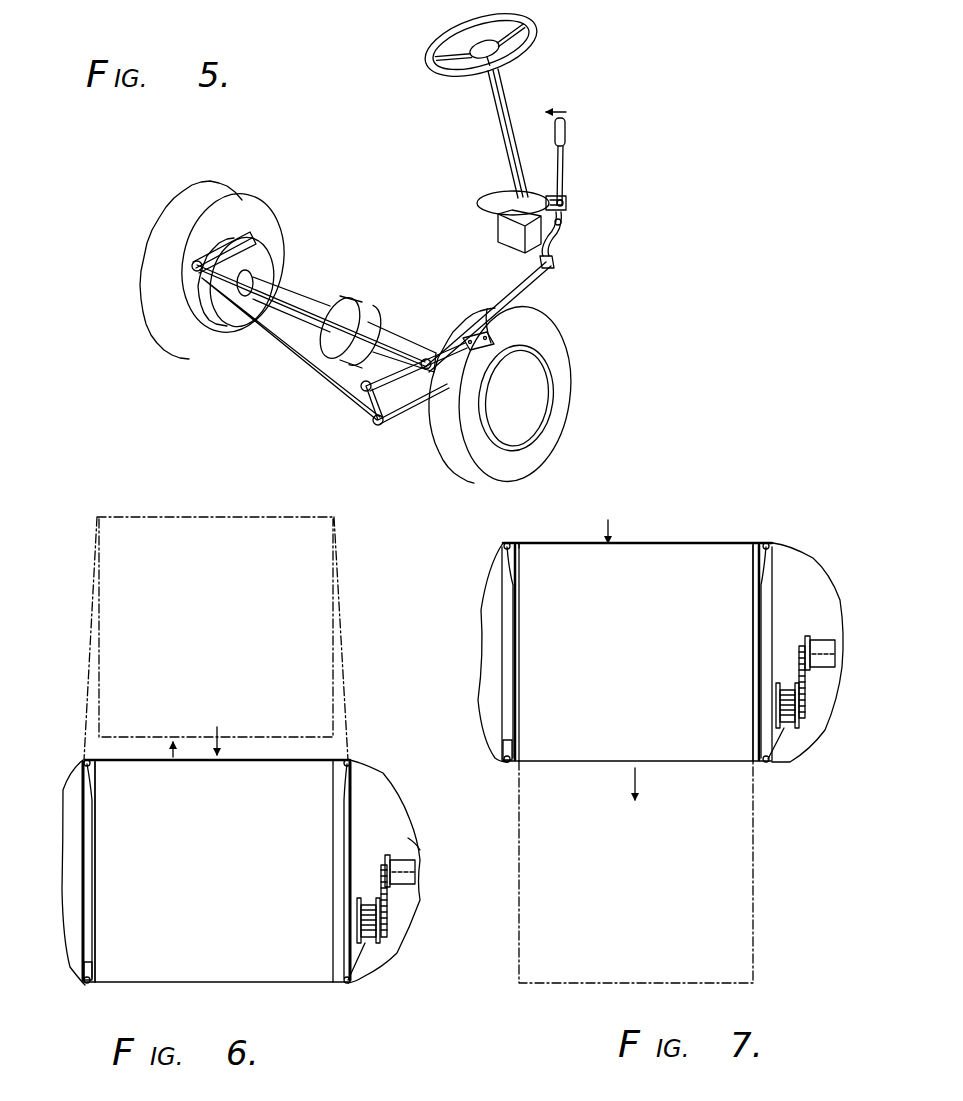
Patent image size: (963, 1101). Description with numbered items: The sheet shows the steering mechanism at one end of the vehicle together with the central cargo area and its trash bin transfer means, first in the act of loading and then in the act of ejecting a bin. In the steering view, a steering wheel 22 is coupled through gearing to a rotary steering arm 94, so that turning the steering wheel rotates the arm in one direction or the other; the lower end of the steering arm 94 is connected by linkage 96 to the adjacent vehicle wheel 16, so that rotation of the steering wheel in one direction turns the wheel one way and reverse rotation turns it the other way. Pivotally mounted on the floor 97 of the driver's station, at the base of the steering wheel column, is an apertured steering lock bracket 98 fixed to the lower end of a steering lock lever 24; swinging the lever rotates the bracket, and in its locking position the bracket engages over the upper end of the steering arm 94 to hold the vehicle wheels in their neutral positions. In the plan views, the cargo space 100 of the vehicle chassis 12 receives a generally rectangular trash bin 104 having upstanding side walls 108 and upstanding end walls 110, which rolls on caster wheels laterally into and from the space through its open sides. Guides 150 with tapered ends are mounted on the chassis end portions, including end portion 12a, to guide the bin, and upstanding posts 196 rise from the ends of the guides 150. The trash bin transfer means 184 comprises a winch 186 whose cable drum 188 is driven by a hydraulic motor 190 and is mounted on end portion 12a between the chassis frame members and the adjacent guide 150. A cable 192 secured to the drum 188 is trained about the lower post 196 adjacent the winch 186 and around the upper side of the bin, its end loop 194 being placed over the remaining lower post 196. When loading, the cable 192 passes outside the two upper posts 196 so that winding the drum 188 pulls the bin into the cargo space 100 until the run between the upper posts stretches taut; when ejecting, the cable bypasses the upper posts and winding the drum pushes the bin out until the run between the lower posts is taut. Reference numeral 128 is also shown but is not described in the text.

In FIG. 6, the vehicle chassis 12 is at (386, 806).
In FIG. 7, the end portion of the vehicle chassis 12a is at (786, 560).
In FIG. 5, the vehicle wheel 16 is at (558, 437).
In FIG. 5, the steering wheel 22 is at (450, 36).
In FIG. 5, the steering lock lever 24 is at (564, 145).
In FIG. 5, the rotary steering arm 94 is at (550, 243).
In FIG. 5, the linkage 96 is at (528, 278).
In FIG. 5, the floor 97 is at (497, 195).
In FIG. 5, the steering lock bracket 98 is at (568, 205).
In FIG. 6, the cargo space 100 is at (95, 932).
In FIG. 7, the cargo space 100 is at (756, 748).
In FIG. 6, the trash bin 104 is at (171, 757).
In FIG. 7, the trash bin 104 is at (608, 526).
In FIG. 6, the side wall 108 is at (264, 760).
In FIG. 7, the side wall 108 is at (703, 543).
In FIG. 6, the end wall 110 is at (90, 985).
In FIG. 7, the end wall 110 is at (514, 763).
In FIG. 6, the housing wall 128 is at (410, 842).
In FIG. 6, the guide 150 is at (92, 848).
In FIG. 7, the guide 150 is at (510, 622).
In FIG. 6, the trash bin transfer means 184 is at (408, 900).
In FIG. 7, the trash bin transfer means 184 is at (812, 688).
In FIG. 6, the winch 186 is at (378, 870).
In FIG. 7, the winch 186 is at (810, 620).
In FIG. 6, the cable drum 188 is at (355, 916).
In FIG. 7, the cable drum 188 is at (776, 690).
In FIG. 6, the hydraulic motor 190 is at (417, 870).
In FIG. 7, the hydraulic motor 190 is at (830, 650).
In FIG. 6, the cable 192 is at (350, 697).
In FIG. 7, the cable 192 is at (521, 541).
In FIG. 6, the loop 194 is at (92, 966).
In FIG. 7, the loop 194 is at (490, 783).
In FIG. 6, the post 196 is at (86, 762).
In FIG. 7, the post 196 is at (504, 545).